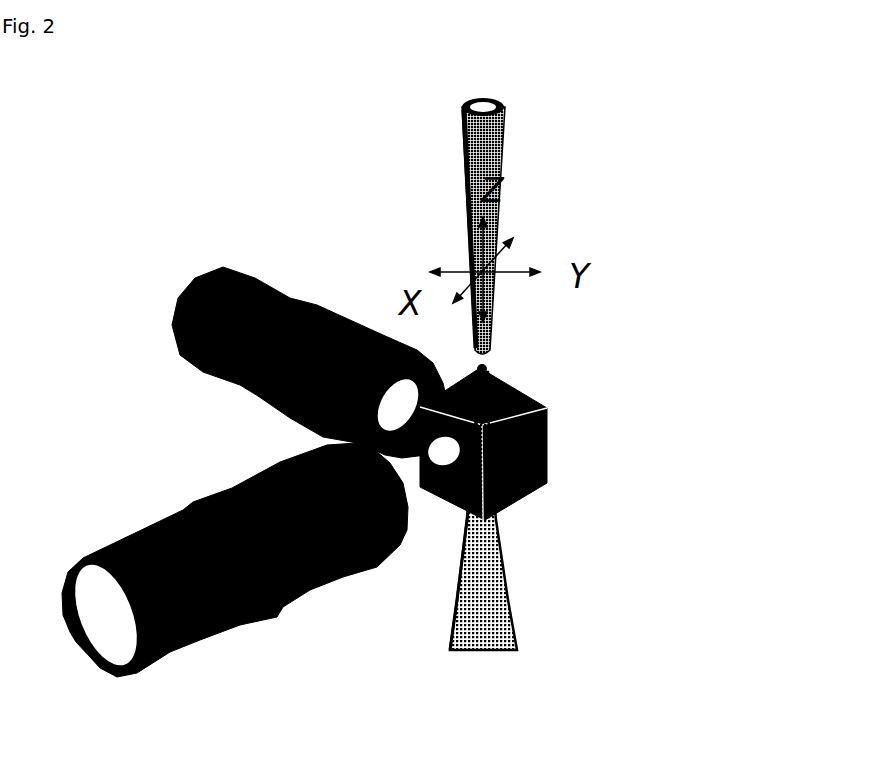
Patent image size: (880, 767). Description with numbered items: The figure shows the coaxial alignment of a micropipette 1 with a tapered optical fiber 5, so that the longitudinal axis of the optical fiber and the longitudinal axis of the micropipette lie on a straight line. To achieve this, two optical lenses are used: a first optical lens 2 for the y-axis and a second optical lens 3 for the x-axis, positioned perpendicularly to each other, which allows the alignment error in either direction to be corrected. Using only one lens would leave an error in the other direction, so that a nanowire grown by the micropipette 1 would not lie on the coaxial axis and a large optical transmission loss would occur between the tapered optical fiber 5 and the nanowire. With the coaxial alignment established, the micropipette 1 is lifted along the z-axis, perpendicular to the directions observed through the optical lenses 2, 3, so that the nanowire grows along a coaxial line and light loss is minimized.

The micropipette 1 is at (597, 226).
The Y axis lens 2 is at (277, 332).
The X axis lens 3 is at (235, 568).
The tapered fiber 5 is at (608, 507).